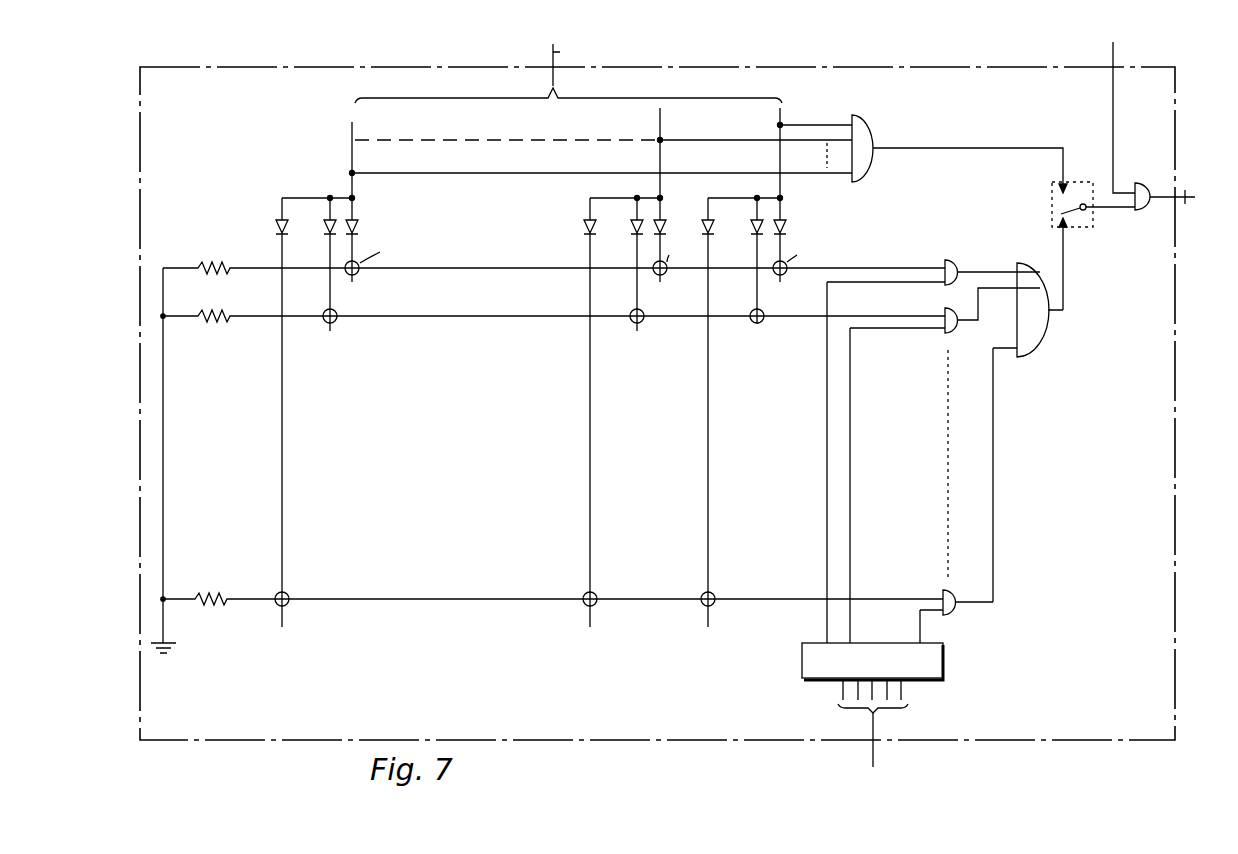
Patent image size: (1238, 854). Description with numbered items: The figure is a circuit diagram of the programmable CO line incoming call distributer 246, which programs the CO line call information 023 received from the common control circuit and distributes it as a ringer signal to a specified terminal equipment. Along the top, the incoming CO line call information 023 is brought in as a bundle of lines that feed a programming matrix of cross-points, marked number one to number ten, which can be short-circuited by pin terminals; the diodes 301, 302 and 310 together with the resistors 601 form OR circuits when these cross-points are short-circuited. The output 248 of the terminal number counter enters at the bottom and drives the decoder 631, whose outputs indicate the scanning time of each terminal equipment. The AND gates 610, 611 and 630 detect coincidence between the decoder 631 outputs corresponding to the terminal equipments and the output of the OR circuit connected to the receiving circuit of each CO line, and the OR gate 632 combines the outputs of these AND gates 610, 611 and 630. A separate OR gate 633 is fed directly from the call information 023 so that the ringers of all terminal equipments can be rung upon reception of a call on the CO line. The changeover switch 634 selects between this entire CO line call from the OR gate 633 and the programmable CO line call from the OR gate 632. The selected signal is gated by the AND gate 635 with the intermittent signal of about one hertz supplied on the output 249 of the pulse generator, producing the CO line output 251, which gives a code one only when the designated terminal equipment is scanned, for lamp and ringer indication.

The incoming call distributer 246 is at (216, 67).
The output of the pulse generator 249 is at (1115, 56).
The CO line call information 023 is at (591, 118).
The OR gate 633 is at (878, 137).
The changeover switch 634 is at (1048, 196).
The AND gate 635 is at (1142, 212).
The CO line output 251 is at (1186, 195).
The resistors 601 is at (222, 256).
The diode 310 is at (360, 226).
The diode 302 is at (666, 227).
The diode 301 is at (788, 227).
The AND gate 610 is at (955, 260).
The AND gate 611 is at (955, 336).
The OR gate 632 is at (1038, 340).
The AND gate 630 is at (953, 591).
The decoder 631 is at (946, 658).
The output of the terminal number counter 248 is at (878, 752).